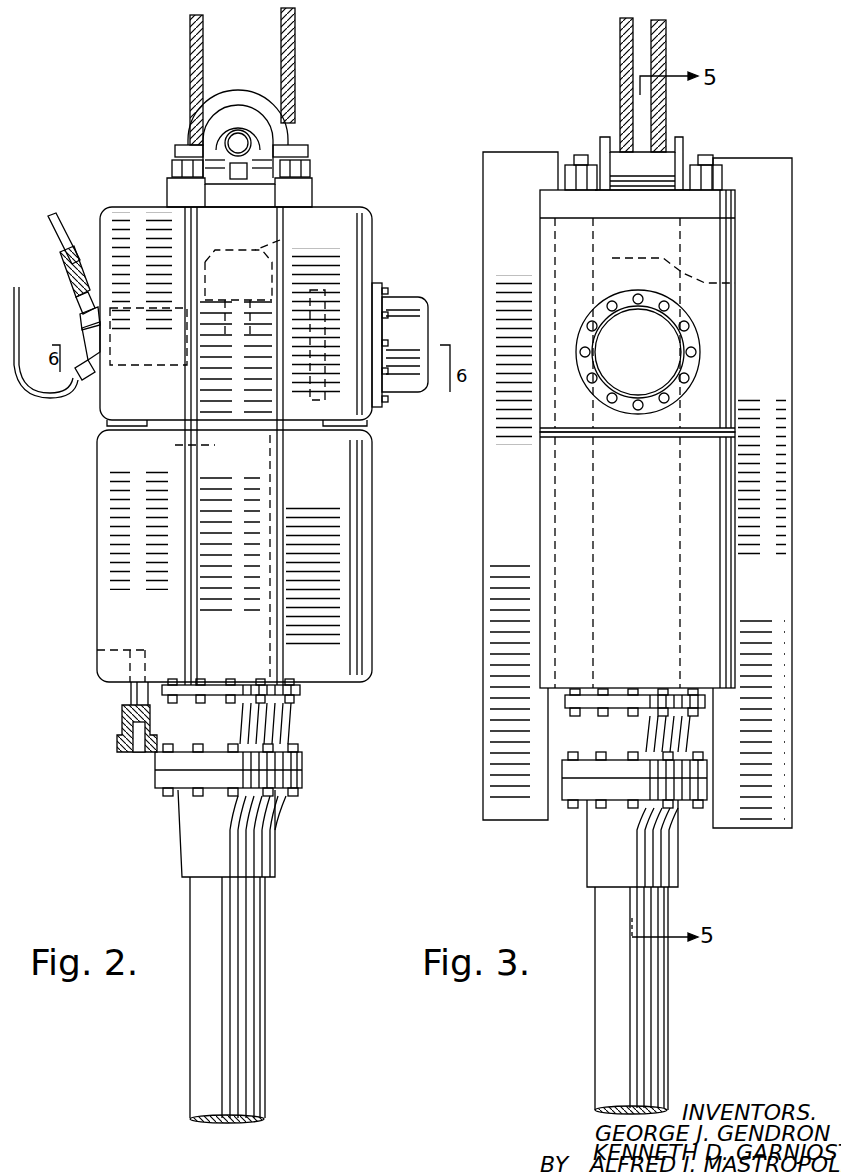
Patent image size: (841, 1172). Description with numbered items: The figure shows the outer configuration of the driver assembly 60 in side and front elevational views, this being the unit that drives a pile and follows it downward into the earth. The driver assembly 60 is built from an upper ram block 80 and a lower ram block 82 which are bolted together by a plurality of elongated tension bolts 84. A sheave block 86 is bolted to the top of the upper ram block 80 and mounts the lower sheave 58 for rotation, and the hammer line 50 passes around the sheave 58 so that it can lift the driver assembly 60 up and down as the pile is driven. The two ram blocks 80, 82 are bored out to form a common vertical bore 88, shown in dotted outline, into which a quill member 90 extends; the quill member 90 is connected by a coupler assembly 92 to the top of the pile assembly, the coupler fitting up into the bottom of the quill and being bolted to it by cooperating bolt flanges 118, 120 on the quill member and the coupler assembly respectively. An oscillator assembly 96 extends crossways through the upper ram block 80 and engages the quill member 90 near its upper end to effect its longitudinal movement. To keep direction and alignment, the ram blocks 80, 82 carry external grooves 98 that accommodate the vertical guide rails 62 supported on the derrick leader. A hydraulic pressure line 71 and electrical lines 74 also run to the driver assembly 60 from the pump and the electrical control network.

In FIG. 2, the hammer line 50 is at (295, 45).
In FIG. 3, the hammer line 50 is at (666, 50).
In FIG. 2, the lower sheave 58 is at (192, 128).
In FIG. 3, the lower sheave 58 is at (665, 132).
In FIG. 2, the driver assembly 60 is at (88, 172).
In FIG. 3, the driver assembly 60 is at (556, 148).
In FIG. 3, the vertical guide rails 62 is at (495, 165).
In FIG. 2, the hydraulic pressure line 71 is at (60, 232).
In FIG. 2, the electrical lines 74 is at (18, 318).
In FIG. 2, the upper ram block 80 is at (372, 232).
In FIG. 3, the upper ram block 80 is at (548, 241).
In FIG. 2, the lower ram block 82 is at (372, 470).
In FIG. 3, the lower ram block 82 is at (548, 497).
In FIG. 2, the elongated tension bolts 84 is at (180, 152).
In FIG. 3, the elongated tension bolts 84 is at (582, 157).
In FIG. 2, the sheave block 86 is at (255, 195).
In FIG. 3, the sheave block 86 is at (618, 165).
In FIG. 2, the common vertical bore 88 is at (350, 563).
In FIG. 3, the common vertical bore 88 is at (735, 283).
In FIG. 2, the quill member 90 is at (326, 710).
In FIG. 3, the quill member 90 is at (720, 258).
In FIG. 2, the coupler assembly 92 is at (312, 802).
In FIG. 3, the coupler assembly 92 is at (577, 830).
In FIG. 2, the oscillator assembly 96 is at (390, 290).
In FIG. 3, the oscillator assembly 96 is at (588, 290).
In FIG. 2, the external grooves 98 is at (200, 232).
In FIG. 2, the bolt flange 118 is at (305, 757).
In FIG. 3, the bolt flange 118 is at (708, 775).
In FIG. 2, the bolt flange 120 is at (305, 780).
In FIG. 3, the bolt flange 120 is at (690, 805).